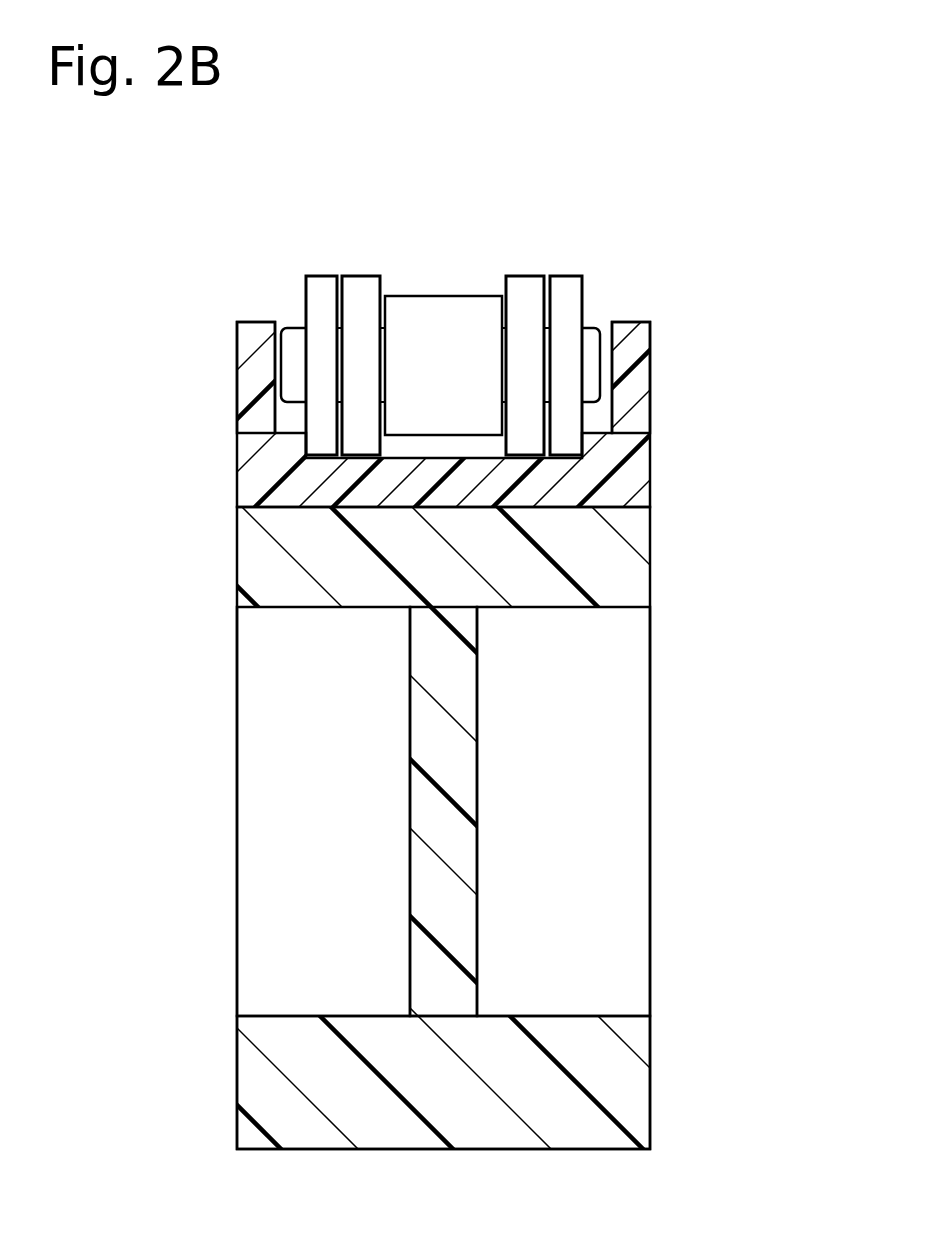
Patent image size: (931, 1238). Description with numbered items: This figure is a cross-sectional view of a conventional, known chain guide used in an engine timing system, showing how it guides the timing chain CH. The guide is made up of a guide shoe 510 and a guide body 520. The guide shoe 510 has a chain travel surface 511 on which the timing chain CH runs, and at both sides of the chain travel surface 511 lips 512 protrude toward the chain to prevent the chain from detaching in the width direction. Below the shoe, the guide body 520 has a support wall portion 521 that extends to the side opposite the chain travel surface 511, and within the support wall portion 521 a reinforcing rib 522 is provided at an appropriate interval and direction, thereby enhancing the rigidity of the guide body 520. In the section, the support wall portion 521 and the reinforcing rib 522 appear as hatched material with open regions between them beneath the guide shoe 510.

The guide shoe 510 is at (650, 489).
The chain travel surface 511 is at (447, 455).
The lips 512 is at (255, 346).
The guide body 520 is at (237, 1117).
The support wall portion 521 is at (440, 775).
The reinforcing rib 522 is at (300, 875).
The timing chain CH is at (433, 263).